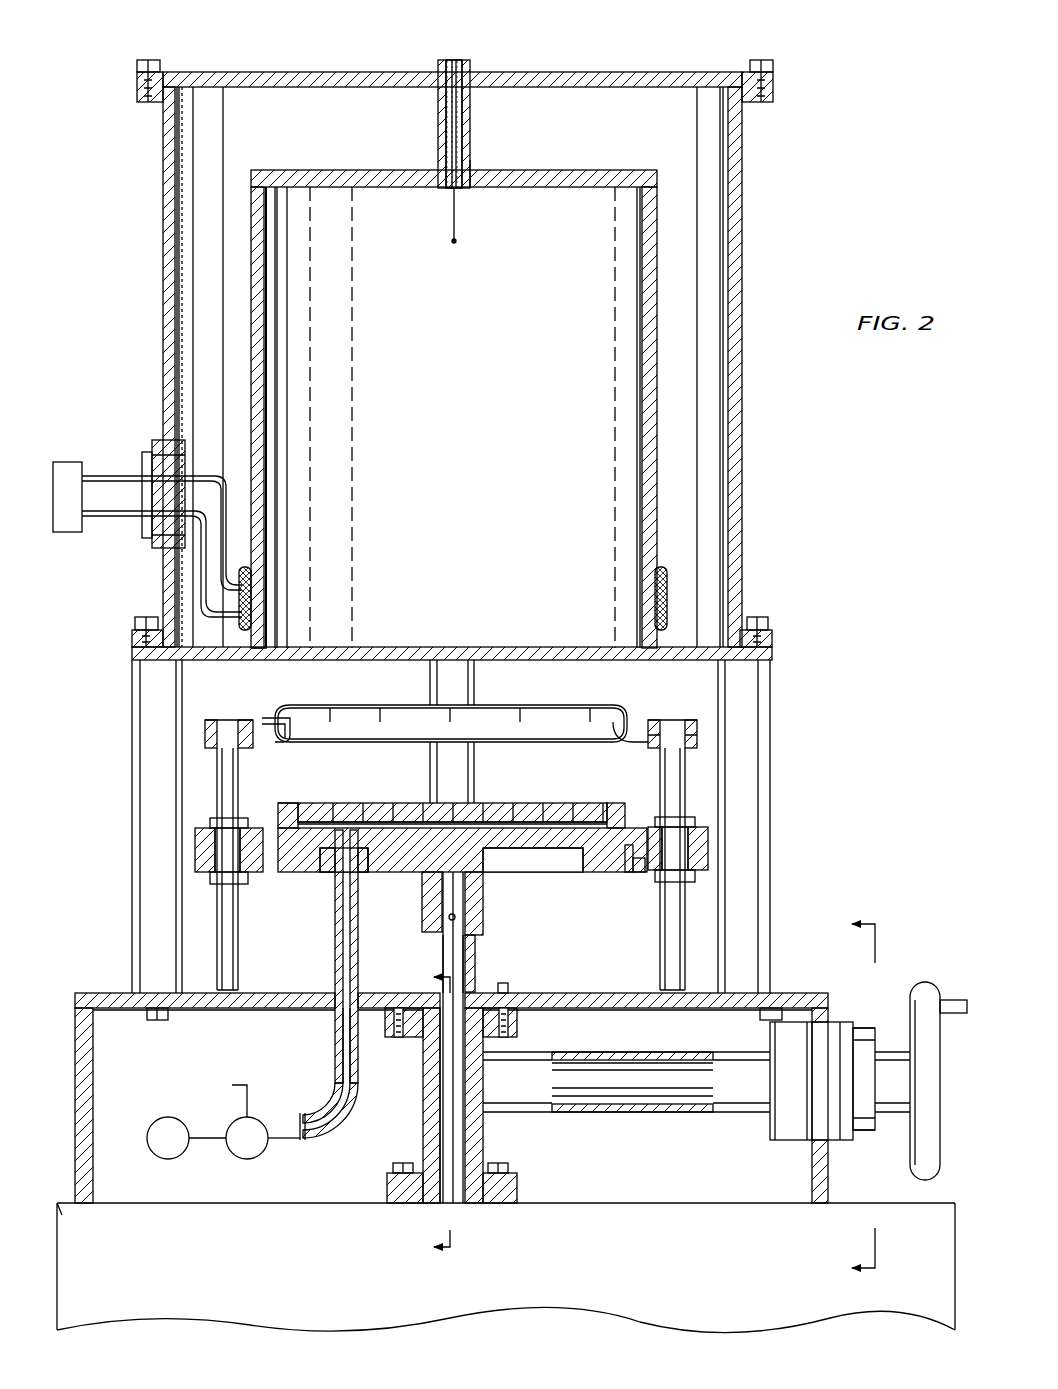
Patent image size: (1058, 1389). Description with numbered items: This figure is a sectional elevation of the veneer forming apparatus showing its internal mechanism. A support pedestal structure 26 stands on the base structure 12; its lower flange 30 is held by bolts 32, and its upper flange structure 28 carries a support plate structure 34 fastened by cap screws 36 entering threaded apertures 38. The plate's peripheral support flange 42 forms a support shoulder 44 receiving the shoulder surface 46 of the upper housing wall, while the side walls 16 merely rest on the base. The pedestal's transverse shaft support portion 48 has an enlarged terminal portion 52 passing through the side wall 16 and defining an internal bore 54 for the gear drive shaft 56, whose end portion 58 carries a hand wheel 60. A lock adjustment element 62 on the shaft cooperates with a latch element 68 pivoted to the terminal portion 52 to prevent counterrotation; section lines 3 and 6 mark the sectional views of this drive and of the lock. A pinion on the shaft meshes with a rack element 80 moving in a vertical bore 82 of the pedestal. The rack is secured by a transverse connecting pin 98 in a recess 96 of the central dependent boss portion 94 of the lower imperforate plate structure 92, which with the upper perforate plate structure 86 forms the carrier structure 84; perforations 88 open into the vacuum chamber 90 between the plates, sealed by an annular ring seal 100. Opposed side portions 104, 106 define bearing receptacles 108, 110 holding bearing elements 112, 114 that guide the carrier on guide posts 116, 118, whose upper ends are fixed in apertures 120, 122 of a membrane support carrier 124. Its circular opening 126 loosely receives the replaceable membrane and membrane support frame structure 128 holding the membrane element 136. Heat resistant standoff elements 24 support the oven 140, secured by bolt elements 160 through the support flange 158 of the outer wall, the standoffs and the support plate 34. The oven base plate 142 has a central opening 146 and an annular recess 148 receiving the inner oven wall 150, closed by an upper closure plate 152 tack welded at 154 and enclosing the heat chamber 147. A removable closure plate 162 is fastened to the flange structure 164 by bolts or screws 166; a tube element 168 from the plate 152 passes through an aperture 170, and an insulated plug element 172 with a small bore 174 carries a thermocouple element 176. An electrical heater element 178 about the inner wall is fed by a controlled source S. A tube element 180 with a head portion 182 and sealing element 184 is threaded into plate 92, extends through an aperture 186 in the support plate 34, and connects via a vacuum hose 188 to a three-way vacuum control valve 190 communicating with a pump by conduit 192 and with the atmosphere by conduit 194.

The base structure 12 is at (306, 1215).
The side walls 16 is at (825, 1010).
The standoff elements 24 is at (133, 745).
The support pedestal structure 26 is at (430, 1110).
The upper flange structure 28 is at (395, 1040).
The lower flange 30 is at (387, 1186).
The bolts 32 is at (515, 1170).
The support plate structure 34 is at (607, 993).
The cap screws 36 is at (512, 990).
The threaded apertures 38 is at (517, 1025).
The peripheral support flange 42 is at (805, 1010).
The support shoulder 44 is at (775, 995).
The shoulder surface 46 is at (130, 1012).
The transverse shaft support portion 48 is at (616, 1112).
The enlarged terminal portion 52 is at (783, 1142).
The internal bore 54 is at (645, 1065).
The gear drive shaft 56 is at (590, 1082).
The end portion 58 is at (895, 1115).
The hand wheel 60 is at (928, 982).
The lock adjustment element 62 is at (870, 1140).
The latch element 68 is at (870, 1028).
The rack element 80 is at (465, 972).
The vertical bore 82 is at (440, 1136).
The carrier structure 84 is at (522, 796).
The upper perforate plate structure 86 is at (303, 803).
The perforations 88 is at (400, 792).
The vacuum chamber 90 is at (548, 822).
The lower imperforate plate structure 92 is at (540, 860).
The central dependent boss portion 94 is at (480, 898).
The recess 96 is at (432, 900).
The transverse connecting pin 98 is at (450, 920).
The annular ring seal 100 is at (618, 866).
The side portion 104 is at (200, 832).
The side portion 106 is at (700, 872).
The bearing receptacle 108 is at (210, 853).
The bearing receptacle 110 is at (700, 835).
The bearing element 112 is at (215, 880).
The bearing element 114 is at (708, 855).
The guide post 116 is at (240, 790).
The guide post 118 is at (660, 770).
The aperture 120 is at (226, 722).
The aperture 122 is at (675, 722).
The membrane support carrier 124 is at (692, 722).
The circular opening 126 is at (280, 718).
The membrane and membrane support frame structure 128 is at (372, 702).
The membrane element 136 is at (490, 740).
The oven 140 is at (598, 68).
The oven base plate 142 is at (773, 654).
The central opening 146 is at (642, 646).
The heat chamber 147 is at (470, 409).
The annular recess 148 is at (268, 645).
The inner oven wall 150 is at (268, 418).
The upper closure plate 152 is at (365, 190).
The tack weld 154 is at (658, 186).
The support flange 158 is at (772, 640).
The bolt elements 160 is at (760, 618).
The removable closure plate 162 is at (262, 72).
The flange structure 164 is at (775, 98).
The bolts or screws 166 is at (770, 62).
The tube element 168 is at (470, 166).
The aperture 170 is at (448, 72).
The insulated plug element 172 is at (462, 125).
The small bore 174 is at (446, 135).
The thermocouple element 176 is at (458, 242).
The electrical heater element 178 is at (652, 585).
The tube element 180 is at (335, 935).
The head portion 182 is at (330, 878).
The sealing element 184 is at (372, 872).
The aperture 186 is at (337, 1015).
The vacuum hose 188 is at (318, 1125).
The three-way vacuum control valve 190 is at (235, 1158).
The conduit 192 is at (210, 1137).
The conduit 194 is at (232, 1085).
The controlled source of electrical energy S is at (147, 528).
The section line 3- 3 is at (423, 1113).
The section line 6- 6 is at (858, 1098).